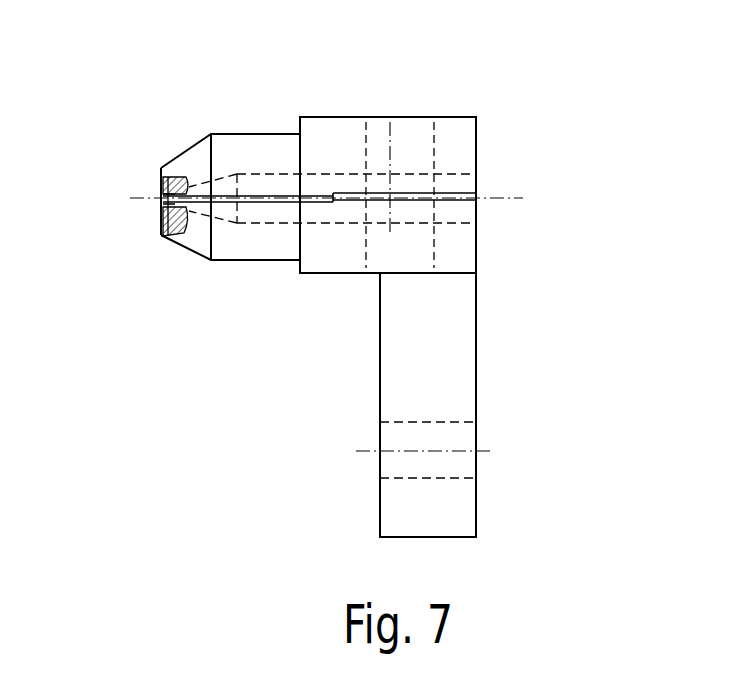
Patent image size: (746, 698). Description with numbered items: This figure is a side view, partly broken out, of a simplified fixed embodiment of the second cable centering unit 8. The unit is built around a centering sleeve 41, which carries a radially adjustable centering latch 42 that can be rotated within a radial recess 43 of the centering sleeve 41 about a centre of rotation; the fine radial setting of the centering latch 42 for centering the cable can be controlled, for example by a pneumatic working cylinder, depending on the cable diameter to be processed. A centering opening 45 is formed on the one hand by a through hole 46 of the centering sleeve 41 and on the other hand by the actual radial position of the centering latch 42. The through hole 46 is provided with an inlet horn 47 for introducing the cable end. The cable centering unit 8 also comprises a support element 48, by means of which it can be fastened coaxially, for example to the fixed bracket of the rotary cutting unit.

The cable centering unit 8 is at (574, 96).
The centering sleeve 41 is at (248, 143).
The centering latch 42 is at (333, 200).
The radial recess 43 is at (462, 193).
The centering opening 45 is at (154, 201).
The through hole 46 is at (180, 237).
The inlet horn 47 is at (160, 212).
The support element 48 is at (458, 378).